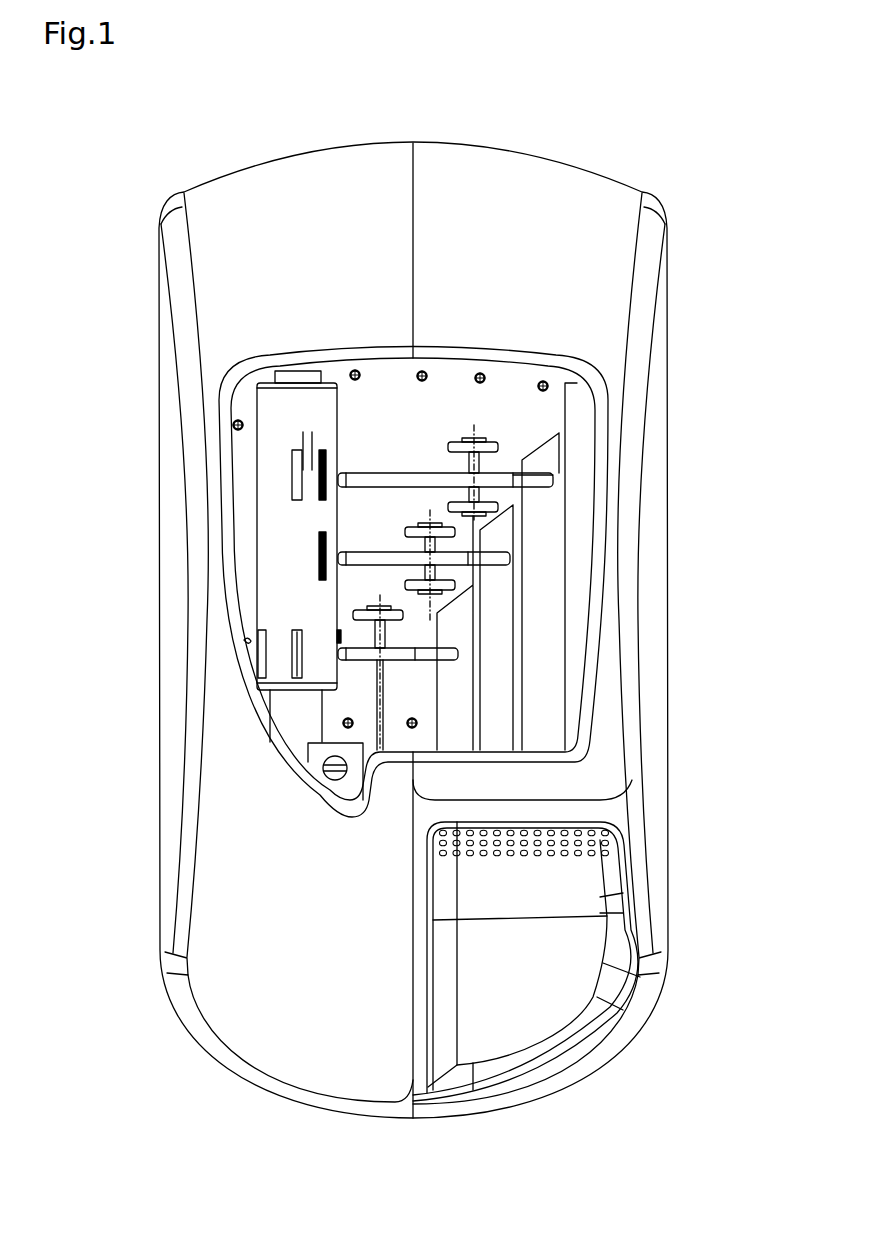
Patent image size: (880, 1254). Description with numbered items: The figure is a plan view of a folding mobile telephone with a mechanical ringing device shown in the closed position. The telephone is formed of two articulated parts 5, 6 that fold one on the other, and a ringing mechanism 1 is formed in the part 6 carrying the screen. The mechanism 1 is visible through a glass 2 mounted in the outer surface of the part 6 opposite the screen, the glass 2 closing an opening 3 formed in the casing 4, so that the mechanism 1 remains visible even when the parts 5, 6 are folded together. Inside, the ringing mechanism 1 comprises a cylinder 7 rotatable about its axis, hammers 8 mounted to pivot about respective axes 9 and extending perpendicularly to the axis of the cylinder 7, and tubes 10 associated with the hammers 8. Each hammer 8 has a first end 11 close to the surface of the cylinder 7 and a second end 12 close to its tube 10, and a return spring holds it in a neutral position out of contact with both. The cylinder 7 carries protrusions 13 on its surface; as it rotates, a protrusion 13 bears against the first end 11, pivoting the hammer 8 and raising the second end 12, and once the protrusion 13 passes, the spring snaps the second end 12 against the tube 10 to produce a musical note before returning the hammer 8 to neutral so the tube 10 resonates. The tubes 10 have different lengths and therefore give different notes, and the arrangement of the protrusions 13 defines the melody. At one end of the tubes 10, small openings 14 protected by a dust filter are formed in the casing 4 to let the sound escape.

The ringing mechanism 1 is at (550, 419).
The glass 2 is at (513, 388).
The opening 3 is at (246, 643).
The casing 4 is at (160, 754).
The articulated part 5 is at (160, 618).
The articulated part 6 is at (264, 311).
The cylinder 7 is at (283, 517).
The hammer 8 is at (400, 472).
The axis 9 is at (475, 463).
The tube 10 is at (493, 617).
The first end 11 is at (350, 471).
The second end 12 is at (548, 480).
The protrusion 13 is at (322, 470).
The small opening 14 is at (607, 833).